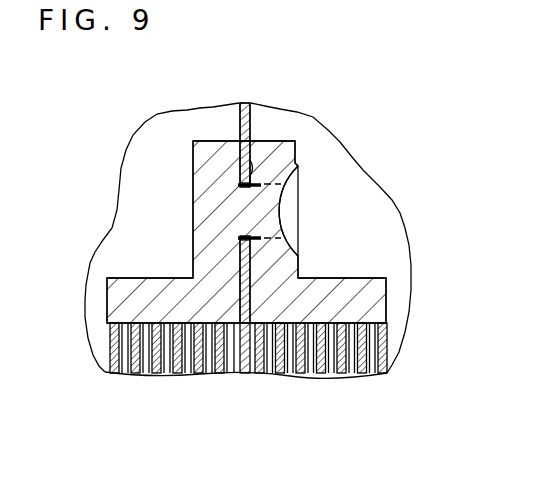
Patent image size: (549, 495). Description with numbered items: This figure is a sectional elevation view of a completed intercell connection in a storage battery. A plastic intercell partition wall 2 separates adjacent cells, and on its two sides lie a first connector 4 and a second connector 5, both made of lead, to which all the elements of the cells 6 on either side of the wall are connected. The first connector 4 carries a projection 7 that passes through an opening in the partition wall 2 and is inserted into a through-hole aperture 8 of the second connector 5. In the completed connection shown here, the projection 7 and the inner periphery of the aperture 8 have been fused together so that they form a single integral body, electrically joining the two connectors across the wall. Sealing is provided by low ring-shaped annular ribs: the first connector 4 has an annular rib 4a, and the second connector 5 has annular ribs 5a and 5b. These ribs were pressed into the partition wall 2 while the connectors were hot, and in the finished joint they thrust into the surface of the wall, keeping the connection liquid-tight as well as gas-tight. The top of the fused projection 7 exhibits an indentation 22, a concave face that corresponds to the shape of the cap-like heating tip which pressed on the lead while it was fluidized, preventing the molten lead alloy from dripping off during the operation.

The intercell partition wall 2 is at (237, 104).
The first connector 4 is at (213, 258).
The annular rib 4a is at (240, 167).
The second connector 5 is at (285, 273).
The annular rib 5a is at (252, 170).
The annular rib 5b is at (254, 173).
The cell 6 is at (171, 352).
The projection 7 is at (250, 211).
The through-hole aperture 8 is at (235, 247).
The indentation 22 is at (290, 217).